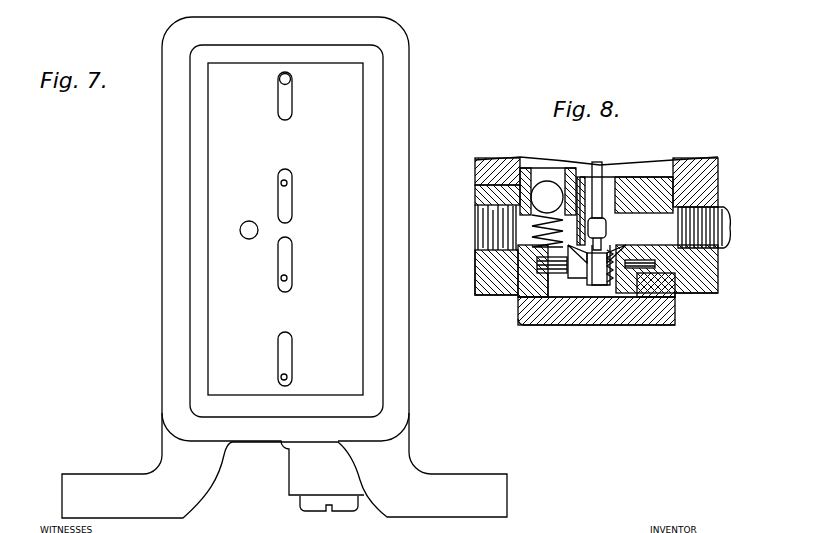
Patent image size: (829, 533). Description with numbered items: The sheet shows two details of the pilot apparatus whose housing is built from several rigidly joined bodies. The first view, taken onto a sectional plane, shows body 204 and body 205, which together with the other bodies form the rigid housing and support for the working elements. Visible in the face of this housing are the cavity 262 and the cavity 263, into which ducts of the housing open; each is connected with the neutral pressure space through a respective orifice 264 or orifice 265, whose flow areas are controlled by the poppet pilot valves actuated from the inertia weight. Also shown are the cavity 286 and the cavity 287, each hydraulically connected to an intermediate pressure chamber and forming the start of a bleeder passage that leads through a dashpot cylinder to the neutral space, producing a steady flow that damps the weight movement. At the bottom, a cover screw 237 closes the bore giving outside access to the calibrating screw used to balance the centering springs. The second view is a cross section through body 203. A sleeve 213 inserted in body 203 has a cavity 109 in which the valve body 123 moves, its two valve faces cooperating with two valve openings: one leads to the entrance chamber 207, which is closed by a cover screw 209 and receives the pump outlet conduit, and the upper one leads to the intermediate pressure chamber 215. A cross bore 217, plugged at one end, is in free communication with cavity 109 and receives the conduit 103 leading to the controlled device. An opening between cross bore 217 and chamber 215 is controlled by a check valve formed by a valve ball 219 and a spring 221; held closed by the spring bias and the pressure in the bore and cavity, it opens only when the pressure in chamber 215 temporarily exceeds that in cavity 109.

In FIG. 7, the body 205 is at (398, 81).
In FIG. 7, the body 204 is at (348, 122).
In FIG. 7, the cavity 286 is at (297, 98).
In FIG. 7, the cavity 262 is at (294, 193).
In FIG. 7, the orifice 264 is at (279, 183).
In FIG. 7, the cavity 263 is at (294, 258).
In FIG. 7, the orifice 265 is at (279, 280).
In FIG. 7, the cavity 287 is at (295, 356).
In FIG. 7, the cover screw 237 is at (309, 503).
In FIG. 8, the valve ball 219 is at (547, 190).
In FIG. 8, the intermediate pressure chamber 215 is at (660, 167).
In FIG. 8, the cross bore 217 is at (722, 164).
In FIG. 8, the conduit 103 is at (721, 210).
In FIG. 8, the valve body 123 is at (606, 225).
In FIG. 8, the cavity 109 is at (604, 241).
In FIG. 8, the spring 221 is at (532, 229).
In FIG. 8, the body 203 is at (490, 294).
In FIG. 8, the sleeve 213 is at (581, 278).
In FIG. 8, the entrance chamber 207 is at (636, 288).
In FIG. 8, the cover screw 209 is at (667, 318).